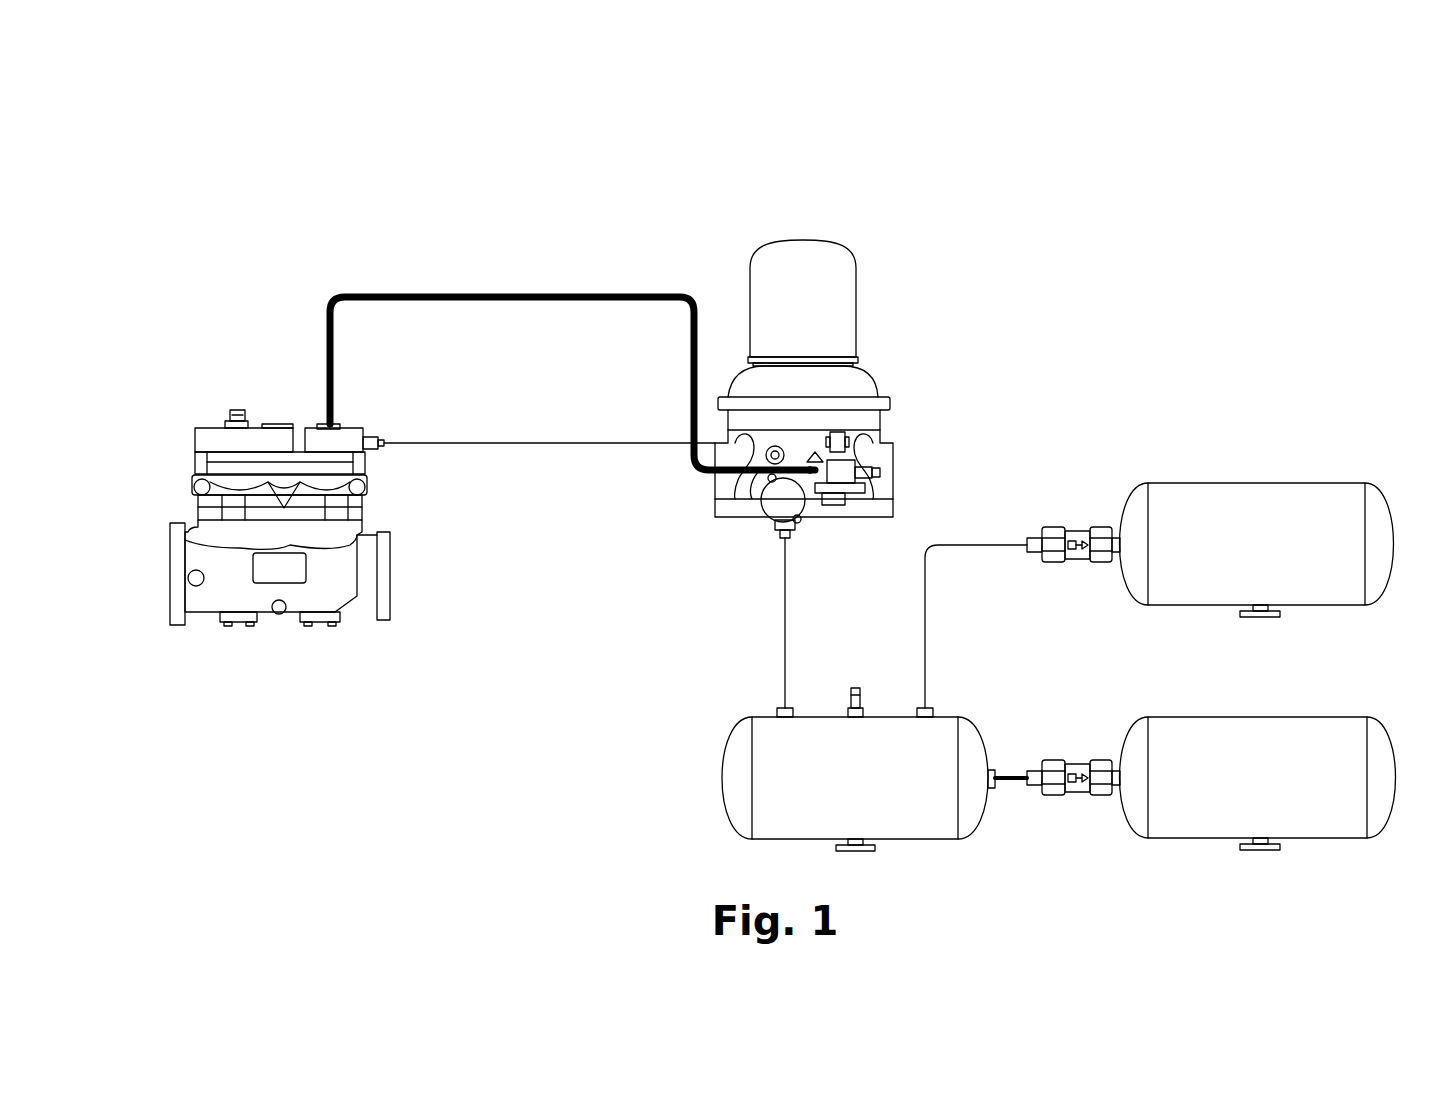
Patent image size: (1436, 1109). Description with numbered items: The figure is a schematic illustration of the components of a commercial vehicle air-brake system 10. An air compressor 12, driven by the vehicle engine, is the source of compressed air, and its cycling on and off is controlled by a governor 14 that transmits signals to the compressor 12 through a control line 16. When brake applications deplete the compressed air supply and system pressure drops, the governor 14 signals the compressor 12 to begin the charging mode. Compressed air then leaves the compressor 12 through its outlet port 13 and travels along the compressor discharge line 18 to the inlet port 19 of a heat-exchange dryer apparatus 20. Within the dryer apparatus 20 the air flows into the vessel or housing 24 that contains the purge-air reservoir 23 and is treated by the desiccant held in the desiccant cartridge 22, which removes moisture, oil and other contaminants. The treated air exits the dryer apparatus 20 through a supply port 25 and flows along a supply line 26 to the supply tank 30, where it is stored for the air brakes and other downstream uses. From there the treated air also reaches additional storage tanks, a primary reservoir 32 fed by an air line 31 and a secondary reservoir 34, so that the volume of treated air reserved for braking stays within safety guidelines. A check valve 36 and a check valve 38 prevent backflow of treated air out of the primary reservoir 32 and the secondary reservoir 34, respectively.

The vehicle air-brake system 10 is at (511, 160).
The air compressor 12 is at (212, 428).
The outlet port 13 is at (340, 425).
The governor 14 is at (772, 502).
The control line 16 is at (550, 444).
The compressor discharge line 18 is at (463, 295).
The inlet port 19 is at (825, 472).
The heat-exchange dryer apparatus 20 is at (955, 250).
The desiccant cartridge 22 is at (775, 242).
The purge-air reservoir 23 is at (830, 388).
The vessel or housing 24 is at (883, 378).
The supply port 25 is at (785, 540).
The supply line 26 is at (785, 655).
The supply tank 30 is at (722, 780).
The air line 31 is at (925, 632).
The primary reservoir 32 is at (1325, 483).
The secondary reservoir 34 is at (1325, 716).
The check valve 36 is at (1052, 528).
The check valve 38 is at (1060, 762).